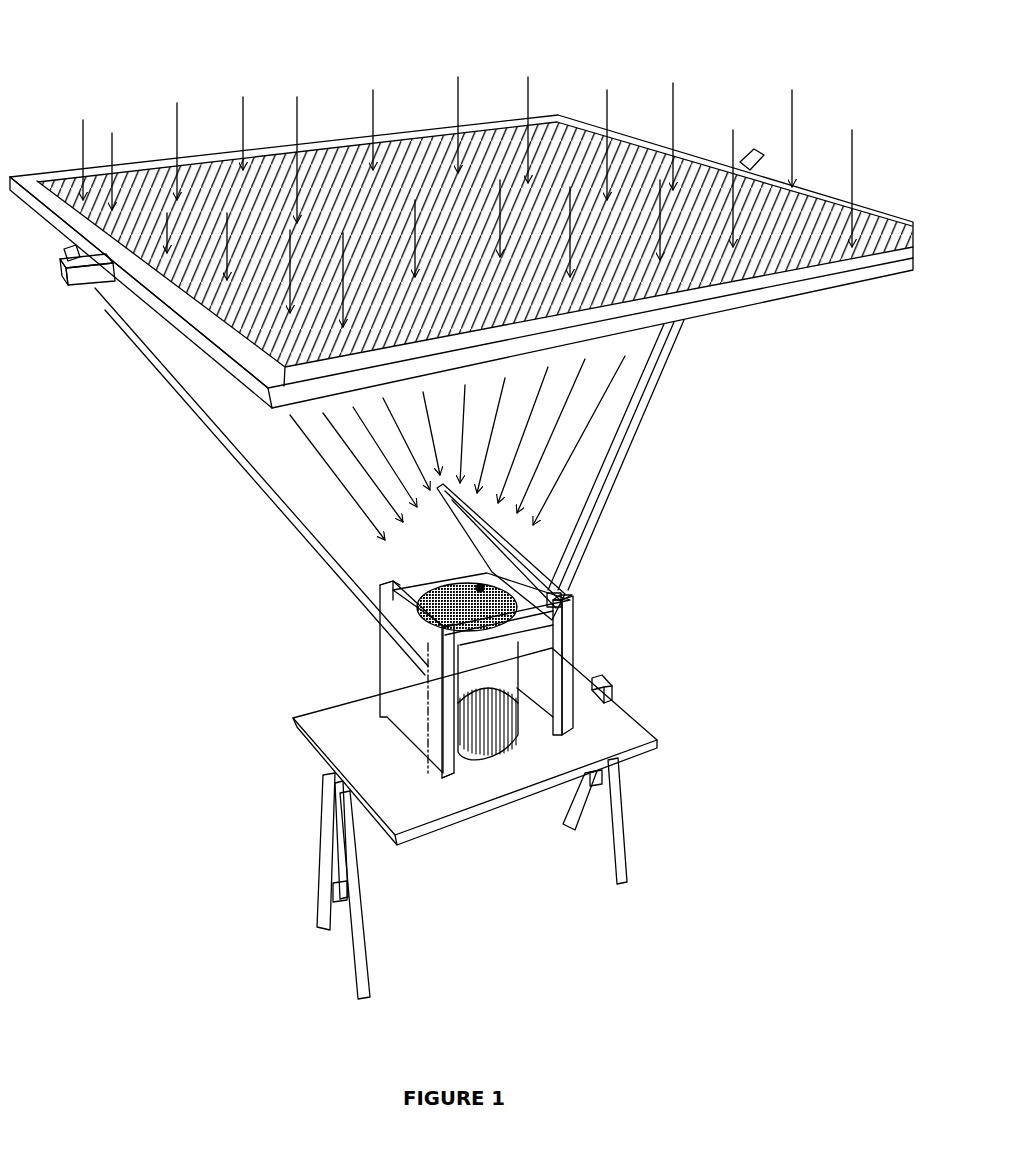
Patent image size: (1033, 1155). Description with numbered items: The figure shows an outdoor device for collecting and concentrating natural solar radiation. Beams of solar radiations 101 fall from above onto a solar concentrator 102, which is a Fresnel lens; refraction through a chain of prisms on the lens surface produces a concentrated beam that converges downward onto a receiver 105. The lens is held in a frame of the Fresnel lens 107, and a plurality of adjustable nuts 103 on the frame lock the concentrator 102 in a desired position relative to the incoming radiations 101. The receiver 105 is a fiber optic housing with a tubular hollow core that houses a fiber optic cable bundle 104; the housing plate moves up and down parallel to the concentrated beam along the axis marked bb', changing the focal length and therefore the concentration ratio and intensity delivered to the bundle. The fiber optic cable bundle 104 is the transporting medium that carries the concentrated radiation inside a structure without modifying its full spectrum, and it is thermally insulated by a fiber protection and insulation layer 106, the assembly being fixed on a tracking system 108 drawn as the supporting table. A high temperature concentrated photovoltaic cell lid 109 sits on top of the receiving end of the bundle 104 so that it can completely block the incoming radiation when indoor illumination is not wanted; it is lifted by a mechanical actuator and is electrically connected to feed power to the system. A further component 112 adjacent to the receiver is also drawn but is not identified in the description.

The solar radiations 101 is at (527, 97).
The solar concentrator 102 is at (722, 262).
The adjustable nuts 103 is at (68, 287).
The fiber optic cable bundle 104 is at (492, 637).
The receiver 105 is at (382, 616).
The fiber protection and insulation layer 106 is at (478, 690).
The frame of the Fresnel lens 107 is at (260, 352).
The tracking system 108 is at (603, 742).
The concentrated photovoltaic cell lid 109 is at (537, 527).
The stage platform 112 is at (540, 622).